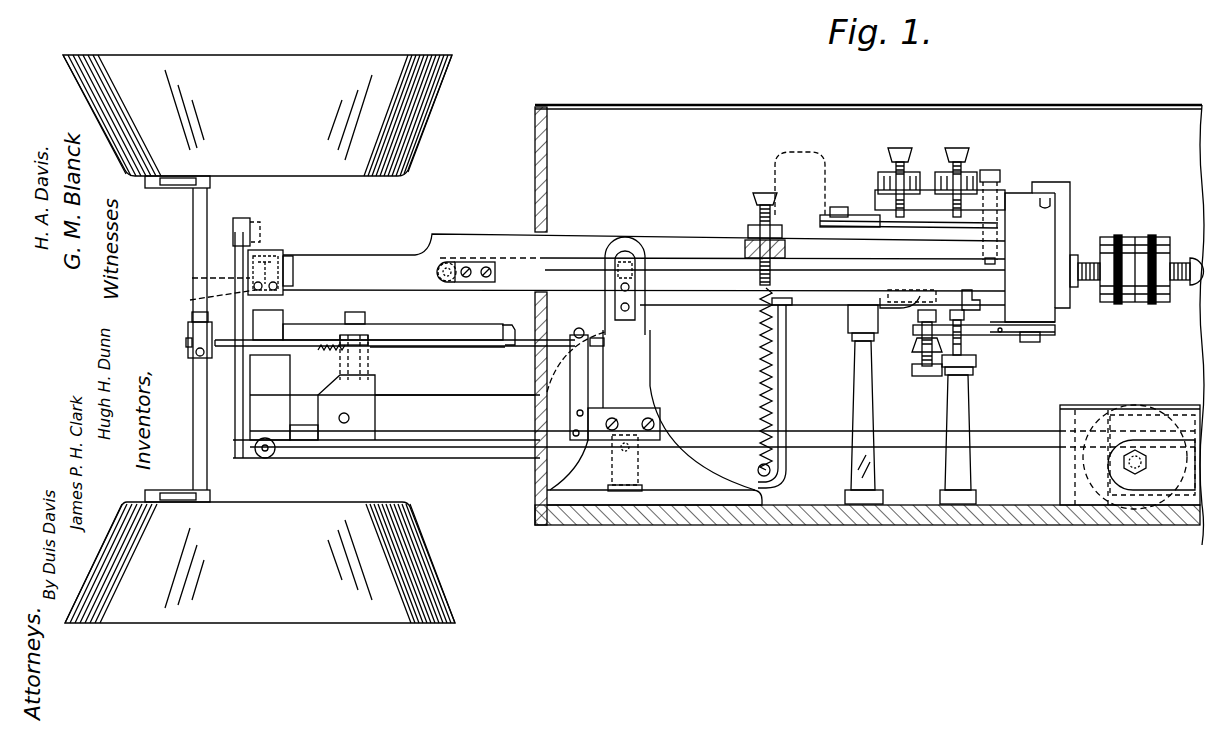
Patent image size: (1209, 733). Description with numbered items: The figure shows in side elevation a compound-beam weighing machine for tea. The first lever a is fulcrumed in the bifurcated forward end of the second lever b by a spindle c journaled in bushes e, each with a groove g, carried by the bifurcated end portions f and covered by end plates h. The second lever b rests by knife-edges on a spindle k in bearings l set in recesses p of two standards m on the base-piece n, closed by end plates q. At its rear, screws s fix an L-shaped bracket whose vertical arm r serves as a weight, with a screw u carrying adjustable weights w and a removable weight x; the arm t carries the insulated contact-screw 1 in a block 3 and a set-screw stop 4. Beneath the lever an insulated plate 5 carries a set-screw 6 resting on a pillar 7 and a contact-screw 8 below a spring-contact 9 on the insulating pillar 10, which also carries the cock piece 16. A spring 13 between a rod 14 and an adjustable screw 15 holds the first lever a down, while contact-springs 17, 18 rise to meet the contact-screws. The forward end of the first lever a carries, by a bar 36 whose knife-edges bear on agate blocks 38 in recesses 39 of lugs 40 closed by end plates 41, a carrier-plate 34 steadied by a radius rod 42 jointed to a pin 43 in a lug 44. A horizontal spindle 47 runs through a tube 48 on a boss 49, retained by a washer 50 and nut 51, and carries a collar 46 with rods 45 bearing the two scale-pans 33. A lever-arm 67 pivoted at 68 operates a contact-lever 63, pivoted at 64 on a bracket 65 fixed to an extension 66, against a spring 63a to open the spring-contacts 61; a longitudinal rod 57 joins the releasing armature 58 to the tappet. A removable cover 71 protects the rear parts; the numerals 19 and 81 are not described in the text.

The scale-pans 33 is at (259, 339).
The rod 45 is at (193, 250).
The boss or collar 46 is at (188, 348).
The horizontal spindle 47 is at (205, 358).
The contact-lever 63 is at (192, 320).
The spring 63a is at (305, 362).
The carrier-plate 34 is at (236, 396).
The radius rod or link 42 is at (448, 452).
The pivot 68 is at (252, 228).
The agate blocks 38 is at (280, 244).
The rearwardly-extending lugs 40 is at (285, 256).
The bar 36 is at (293, 270).
The end plates 41 is at (278, 292).
The recesses 39 is at (210, 277).
The lever-arm 67 is at (207, 300).
The boss 49 is at (268, 325).
The tube 48 is at (393, 330).
The washer 50 is at (506, 325).
The nut 51 is at (515, 346).
The pivot 64 is at (352, 314).
The bracket 65 is at (340, 360).
The extension 66 is at (455, 409).
The removable cover or casing 71 is at (869, 325).
The vertically-adjustable screw 15 is at (757, 212).
The guide 81 is at (800, 183).
The spring 13 is at (753, 379).
The rod 14 is at (787, 390).
The contact-screw 1 is at (965, 160).
The block of insulating material 3 is at (878, 186).
The block 19 is at (856, 207).
The contact-spring 18 is at (910, 228).
The contact-spring 17 is at (978, 226).
The set-screw stop 4 is at (990, 217).
The arm or cock piece 16 is at (915, 287).
The insulated plate 5 is at (984, 335).
The contact-screw 8 is at (916, 340).
The spring-contact 9 is at (920, 306).
The set-screw 6 is at (966, 360).
The pillar 7 is at (958, 429).
The second pillar 10 is at (864, 404).
The longitudinal rod 57 is at (655, 450).
The armature 58 is at (1170, 412).
The pin 43 is at (638, 450).
The lug 44 is at (625, 476).
The pin / spring-contacts 61 is at (576, 377).
The first lever a is at (644, 262).
The second lever b is at (822, 293).
The spindle c is at (451, 272).
The bushes e is at (464, 280).
The bifurcated end portions f is at (516, 274).
The slot or groove g is at (440, 284).
The end plates h is at (450, 264).
The spindle k is at (636, 248).
The bearings l is at (630, 287).
The standards m is at (654, 417).
The base-piece n is at (947, 534).
The recesses p is at (606, 270).
The end plates q is at (630, 306).
The vertical arm of bracket r is at (1030, 262).
The screws s is at (970, 293).
The arm of bracket t is at (940, 207).
The screw u is at (1085, 277).
The adjustable weights w is at (1152, 277).
The removable weight x is at (1072, 214).